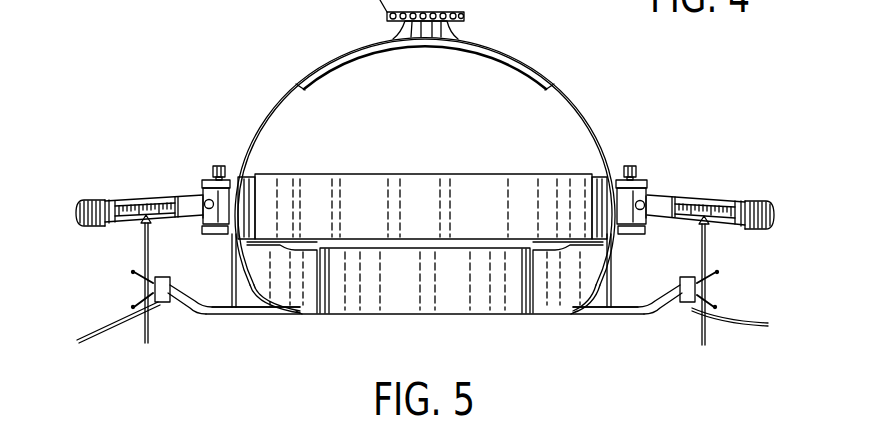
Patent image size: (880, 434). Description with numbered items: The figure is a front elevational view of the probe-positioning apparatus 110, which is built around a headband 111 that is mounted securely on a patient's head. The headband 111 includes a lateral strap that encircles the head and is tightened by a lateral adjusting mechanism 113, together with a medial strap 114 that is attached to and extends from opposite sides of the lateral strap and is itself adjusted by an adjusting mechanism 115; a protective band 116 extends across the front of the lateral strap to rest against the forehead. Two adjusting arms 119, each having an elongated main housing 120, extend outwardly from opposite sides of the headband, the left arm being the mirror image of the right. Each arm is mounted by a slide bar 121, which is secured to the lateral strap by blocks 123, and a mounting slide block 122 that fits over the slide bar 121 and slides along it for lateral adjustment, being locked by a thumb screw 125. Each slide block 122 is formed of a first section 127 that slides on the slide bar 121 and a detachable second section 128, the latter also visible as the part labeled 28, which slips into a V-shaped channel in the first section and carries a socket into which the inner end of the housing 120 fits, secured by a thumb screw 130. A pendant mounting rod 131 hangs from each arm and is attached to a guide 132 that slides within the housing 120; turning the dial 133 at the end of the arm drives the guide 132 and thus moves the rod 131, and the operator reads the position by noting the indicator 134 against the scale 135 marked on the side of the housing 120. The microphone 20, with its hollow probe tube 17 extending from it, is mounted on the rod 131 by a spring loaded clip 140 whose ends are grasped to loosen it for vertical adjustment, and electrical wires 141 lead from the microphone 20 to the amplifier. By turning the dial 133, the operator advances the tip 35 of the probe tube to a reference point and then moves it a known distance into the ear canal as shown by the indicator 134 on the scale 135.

The apparatus 110 is at (578, 93).
The headband 111 is at (350, 317).
The lateral adjusting mechanism 113 is at (482, 317).
The medial strap 114 is at (585, 124).
The adjusting mechanism 115 is at (531, 72).
The protective band 116 is at (490, 172).
The adjusting arm 119 is at (78, 211).
The main housing 120 is at (160, 198).
The slide bar 121 is at (220, 252).
The mounting slide block 122 is at (201, 180).
The block 123 is at (232, 272).
The thumb screw 125 is at (222, 166).
The first section 127 is at (210, 235).
The second section 128 is at (204, 213).
The pivot pin 28 is at (652, 234).
The thumb screw 130 is at (203, 197).
The pendant mounting rod 131 is at (141, 345).
The guide 132 is at (141, 224).
The dial 133 is at (102, 210).
The indicator 134 is at (140, 205).
The scale 135 is at (116, 223).
The spring loaded clip 140 is at (134, 300).
The electrical wires 141 is at (107, 338).
The probe tube 17 is at (240, 316).
The microphone 20 is at (171, 301).
The tip 35 is at (281, 315).